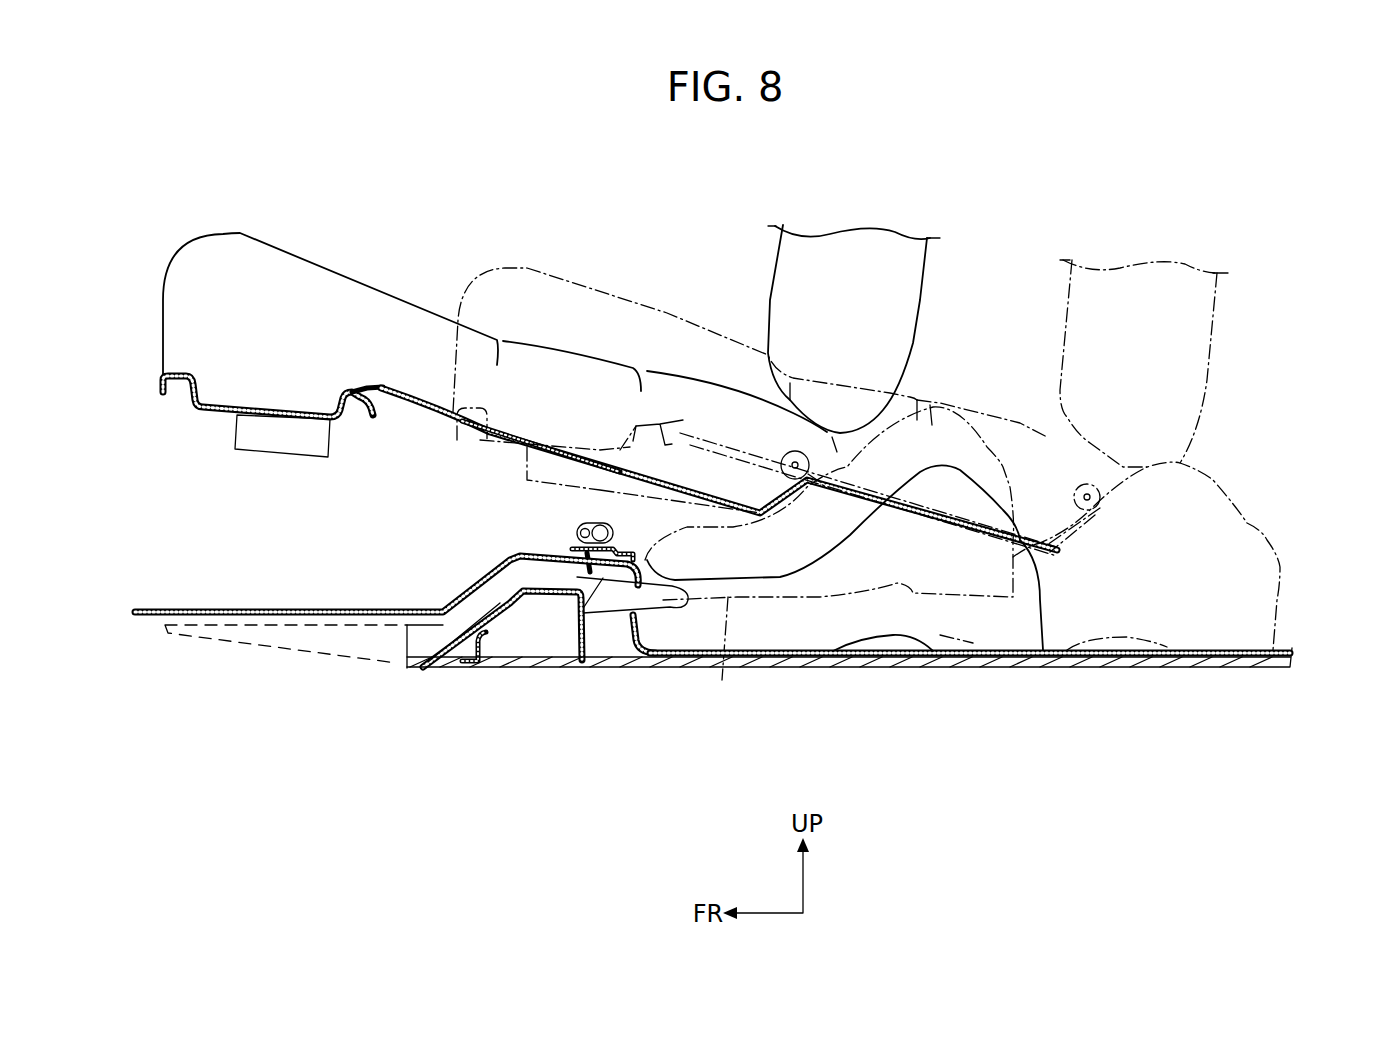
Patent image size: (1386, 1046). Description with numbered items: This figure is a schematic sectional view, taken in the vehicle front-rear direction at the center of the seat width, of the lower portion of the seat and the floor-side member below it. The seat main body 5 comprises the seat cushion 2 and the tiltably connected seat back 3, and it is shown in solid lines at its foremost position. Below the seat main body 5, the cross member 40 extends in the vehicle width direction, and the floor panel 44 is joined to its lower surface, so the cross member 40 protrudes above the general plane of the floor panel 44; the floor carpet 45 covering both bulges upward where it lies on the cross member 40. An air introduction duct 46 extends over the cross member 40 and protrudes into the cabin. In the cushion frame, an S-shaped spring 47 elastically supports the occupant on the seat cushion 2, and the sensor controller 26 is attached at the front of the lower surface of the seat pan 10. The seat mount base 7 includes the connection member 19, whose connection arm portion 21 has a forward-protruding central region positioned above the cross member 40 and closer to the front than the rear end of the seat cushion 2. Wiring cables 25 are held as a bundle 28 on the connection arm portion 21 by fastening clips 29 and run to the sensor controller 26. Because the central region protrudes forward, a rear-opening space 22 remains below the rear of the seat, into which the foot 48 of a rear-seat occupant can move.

The seat cushion 2 is at (338, 273).
The seat back 3 is at (920, 314).
The seat main body 5 is at (870, 212).
The seat mount base 7 is at (636, 528).
The seat pan 10 is at (217, 410).
The connection member 19 is at (576, 533).
The connection arm portion 21 is at (386, 558).
The concave space 22 is at (687, 567).
The wiring cables 25 is at (600, 515).
The sensor controller 26 is at (280, 453).
The bundle 28 is at (829, 385).
The fastening clips 29 is at (577, 600).
The cross member 40 is at (590, 633).
The floor panel 44 is at (910, 668).
The floor carpet 45 is at (1250, 617).
The air introduction duct 46 is at (488, 662).
The S-shaped spring 47 is at (432, 407).
The foot 48 is at (690, 620).